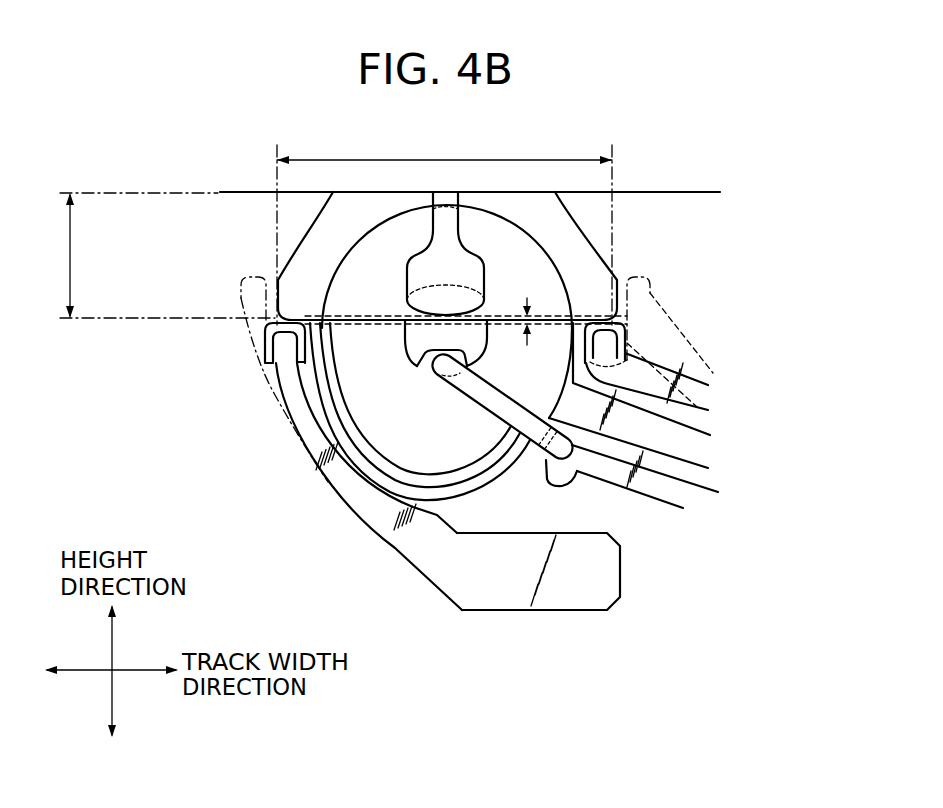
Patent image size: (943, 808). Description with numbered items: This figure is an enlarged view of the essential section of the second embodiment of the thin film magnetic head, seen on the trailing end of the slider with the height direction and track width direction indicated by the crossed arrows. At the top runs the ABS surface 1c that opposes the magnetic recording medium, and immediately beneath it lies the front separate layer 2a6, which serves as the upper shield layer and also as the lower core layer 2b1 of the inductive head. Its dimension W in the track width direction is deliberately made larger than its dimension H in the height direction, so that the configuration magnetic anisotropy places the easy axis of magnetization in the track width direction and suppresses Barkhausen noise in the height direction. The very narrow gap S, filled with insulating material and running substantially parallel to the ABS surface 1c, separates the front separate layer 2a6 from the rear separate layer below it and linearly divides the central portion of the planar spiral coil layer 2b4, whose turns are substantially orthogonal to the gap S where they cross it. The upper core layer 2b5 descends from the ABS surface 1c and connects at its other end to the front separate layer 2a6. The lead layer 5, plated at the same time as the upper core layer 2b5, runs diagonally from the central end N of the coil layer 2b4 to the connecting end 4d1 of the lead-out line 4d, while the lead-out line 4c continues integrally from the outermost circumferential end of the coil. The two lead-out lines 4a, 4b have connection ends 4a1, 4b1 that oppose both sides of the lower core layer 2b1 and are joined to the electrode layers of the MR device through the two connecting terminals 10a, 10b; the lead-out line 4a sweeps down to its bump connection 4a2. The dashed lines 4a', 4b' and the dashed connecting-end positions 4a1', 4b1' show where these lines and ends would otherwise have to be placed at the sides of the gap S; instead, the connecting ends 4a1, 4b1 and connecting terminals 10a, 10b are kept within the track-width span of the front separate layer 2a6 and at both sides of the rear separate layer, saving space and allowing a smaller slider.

The ABS surface 1c is at (692, 183).
The coil layer 2b4 is at (352, 243).
The front separate layer 2a6 is at (296, 246).
The lower core layer 2b1 is at (447, 256).
The upper core layer 2b5 is at (483, 282).
The central end N is at (440, 362).
The lead layer 5 is at (495, 397).
The connecting terminal 10a is at (263, 338).
The connecting terminal 10b is at (620, 322).
The lead-out line 4a is at (369, 486).
The connection end 4a1 is at (247, 388).
The connection end position 4a1' is at (199, 298).
The lead-out line position 4a' is at (247, 390).
The bump connection 4a2 is at (567, 587).
The lead-out line 4b is at (694, 391).
The connection end 4b1 is at (696, 342).
The connection end position 4b1' is at (686, 310).
The lead-out line position 4b' is at (710, 350).
The lead-out line 4c is at (690, 445).
The lead-out line 4d is at (672, 489).
The connecting end 4d1 is at (577, 473).
The dimension in the track width direction W is at (444, 230).
The dimension in the height direction H is at (161, 255).
The gap S is at (532, 320).